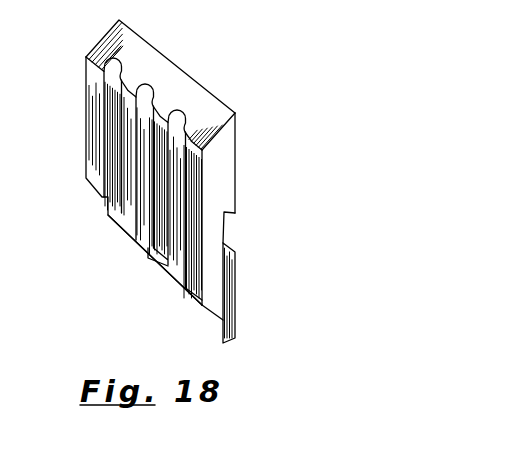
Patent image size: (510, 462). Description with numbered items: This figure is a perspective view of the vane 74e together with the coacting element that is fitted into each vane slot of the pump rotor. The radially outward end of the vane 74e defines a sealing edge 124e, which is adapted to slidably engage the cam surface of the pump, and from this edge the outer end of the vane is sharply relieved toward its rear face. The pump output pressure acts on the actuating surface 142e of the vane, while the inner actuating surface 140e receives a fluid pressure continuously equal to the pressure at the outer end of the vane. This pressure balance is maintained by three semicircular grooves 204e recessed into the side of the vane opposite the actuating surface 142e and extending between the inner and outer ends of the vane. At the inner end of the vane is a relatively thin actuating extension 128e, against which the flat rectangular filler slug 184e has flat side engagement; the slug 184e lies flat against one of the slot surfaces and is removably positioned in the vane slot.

The vane 74e is at (181, 63).
The sealing edge 124e is at (218, 99).
The actuating extension 128e is at (211, 274).
The inner actuating surface 140e is at (213, 311).
The actuating surface 142e is at (237, 214).
The filler slug 184e is at (241, 291).
The semicircular groove 204e is at (110, 73).